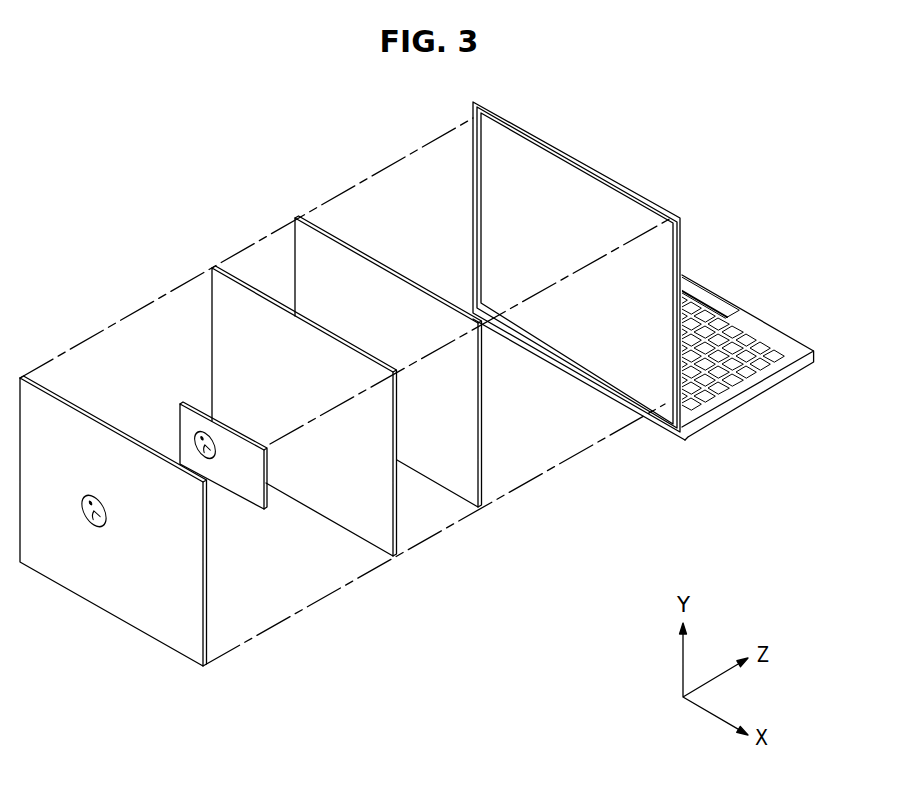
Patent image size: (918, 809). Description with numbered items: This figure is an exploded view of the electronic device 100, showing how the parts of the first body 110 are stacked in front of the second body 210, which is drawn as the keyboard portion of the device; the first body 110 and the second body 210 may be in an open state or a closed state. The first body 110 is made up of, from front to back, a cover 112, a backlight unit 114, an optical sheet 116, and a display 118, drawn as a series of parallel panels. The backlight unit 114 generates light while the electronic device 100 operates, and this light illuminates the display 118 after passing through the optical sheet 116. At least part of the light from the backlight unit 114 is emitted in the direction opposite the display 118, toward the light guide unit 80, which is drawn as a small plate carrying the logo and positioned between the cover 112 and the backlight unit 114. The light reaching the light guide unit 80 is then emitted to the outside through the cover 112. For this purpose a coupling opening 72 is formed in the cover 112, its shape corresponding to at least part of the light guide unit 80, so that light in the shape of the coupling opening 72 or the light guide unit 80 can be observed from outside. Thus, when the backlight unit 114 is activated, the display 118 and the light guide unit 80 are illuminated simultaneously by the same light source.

The electronic device 100 is at (211, 204).
The first body 110 is at (287, 759).
The cover 112 is at (193, 598).
The backlight unit 114 is at (385, 492).
The optical sheet 116 is at (467, 440).
The display 118 is at (672, 383).
The coupling opening 72 is at (88, 524).
The light guide unit 80 is at (265, 464).
The second body 210 is at (764, 407).